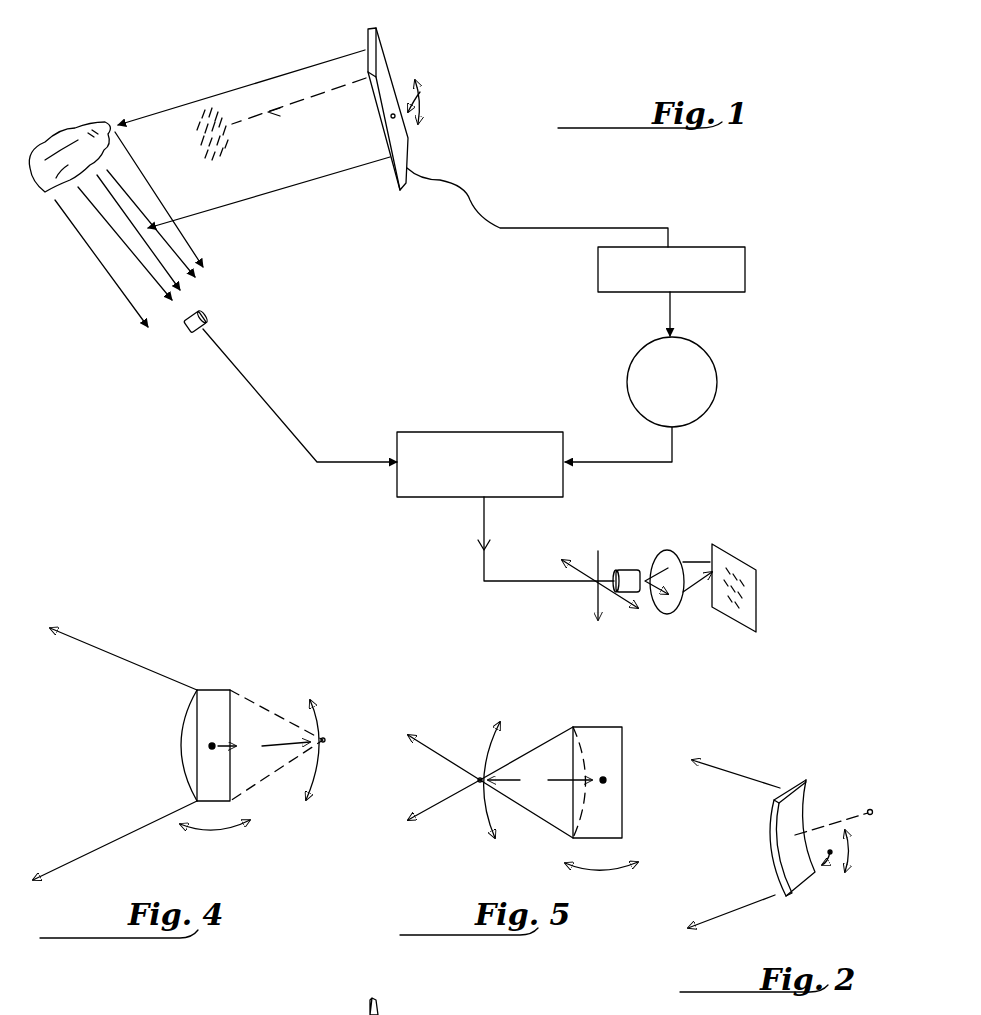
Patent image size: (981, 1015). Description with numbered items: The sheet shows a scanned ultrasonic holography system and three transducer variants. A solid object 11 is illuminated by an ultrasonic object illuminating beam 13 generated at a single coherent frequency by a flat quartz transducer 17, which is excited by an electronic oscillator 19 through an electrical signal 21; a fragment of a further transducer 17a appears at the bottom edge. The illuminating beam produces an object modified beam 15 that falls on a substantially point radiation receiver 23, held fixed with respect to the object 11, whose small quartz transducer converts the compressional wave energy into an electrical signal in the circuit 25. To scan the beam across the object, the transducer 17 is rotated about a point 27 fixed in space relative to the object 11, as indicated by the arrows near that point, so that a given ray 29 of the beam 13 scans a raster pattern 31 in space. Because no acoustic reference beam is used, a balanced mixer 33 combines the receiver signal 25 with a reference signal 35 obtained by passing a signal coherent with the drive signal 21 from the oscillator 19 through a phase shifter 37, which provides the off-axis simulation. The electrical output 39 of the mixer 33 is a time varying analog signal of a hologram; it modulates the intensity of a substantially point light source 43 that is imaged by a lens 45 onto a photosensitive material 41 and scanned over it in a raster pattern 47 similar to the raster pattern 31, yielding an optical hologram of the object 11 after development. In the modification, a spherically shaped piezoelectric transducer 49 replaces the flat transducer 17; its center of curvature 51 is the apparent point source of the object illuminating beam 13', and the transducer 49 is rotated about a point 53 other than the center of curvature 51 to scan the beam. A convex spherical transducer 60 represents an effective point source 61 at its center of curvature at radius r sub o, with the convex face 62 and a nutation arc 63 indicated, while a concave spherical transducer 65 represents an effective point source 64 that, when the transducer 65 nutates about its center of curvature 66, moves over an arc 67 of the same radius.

In FIG. 1, the solid object 11 is at (60, 152).
In FIG. 1, the object illuminating beam 13 is at (254, 139).
In FIG. 2, the object illuminating beam 13' is at (741, 830).
In FIG. 1, the object modified beam 15 is at (117, 247).
In FIG. 1, the flat quartz transducer 17 is at (382, 55).
In FIG. 5, the mirror 17a is at (392, 1014).
In FIG. 1, the electronic oscillator 19 is at (705, 247).
In FIG. 1, the electrical signal 21 is at (490, 218).
In FIG. 1, the point radiation receiver 23 is at (203, 316).
In FIG. 1, the circuit 25 is at (251, 381).
In FIG. 1, the rotation point 27 is at (393, 115).
In FIG. 1, the ray 29 is at (320, 98).
In FIG. 1, the raster pattern 31 is at (225, 145).
In FIG. 1, the balanced mixer 33 is at (416, 442).
In FIG. 1, the reference signal 35 is at (630, 460).
In FIG. 1, the phase shifter 37 is at (705, 363).
In FIG. 1, the electrical output 39 is at (482, 522).
In FIG. 1, the photosensitive material 41 is at (722, 548).
In FIG. 1, the point light source 43 is at (632, 570).
In FIG. 1, the lens 45 is at (668, 608).
In FIG. 1, the raster pattern 47 is at (733, 604).
In FIG. 2, the spherically shaped transducer 49 is at (792, 800).
In FIG. 2, the center of curvature 51 is at (872, 808).
In FIG. 2, the rotation point 53 is at (828, 860).
In FIG. 4, the convex spherical transducer 60 is at (216, 690).
In FIG. 4, the effective point source 61 is at (327, 738).
In FIG. 4, the focal point 62 is at (208, 748).
In FIG. 4, the oscillation arc 63 is at (316, 697).
In FIG. 5, the effective point source 64 is at (490, 770).
In FIG. 5, the concave spherical transducer 65 is at (600, 740).
In FIG. 5, the center of curvature 66 is at (608, 776).
In FIG. 5, the arc 67 is at (485, 745).